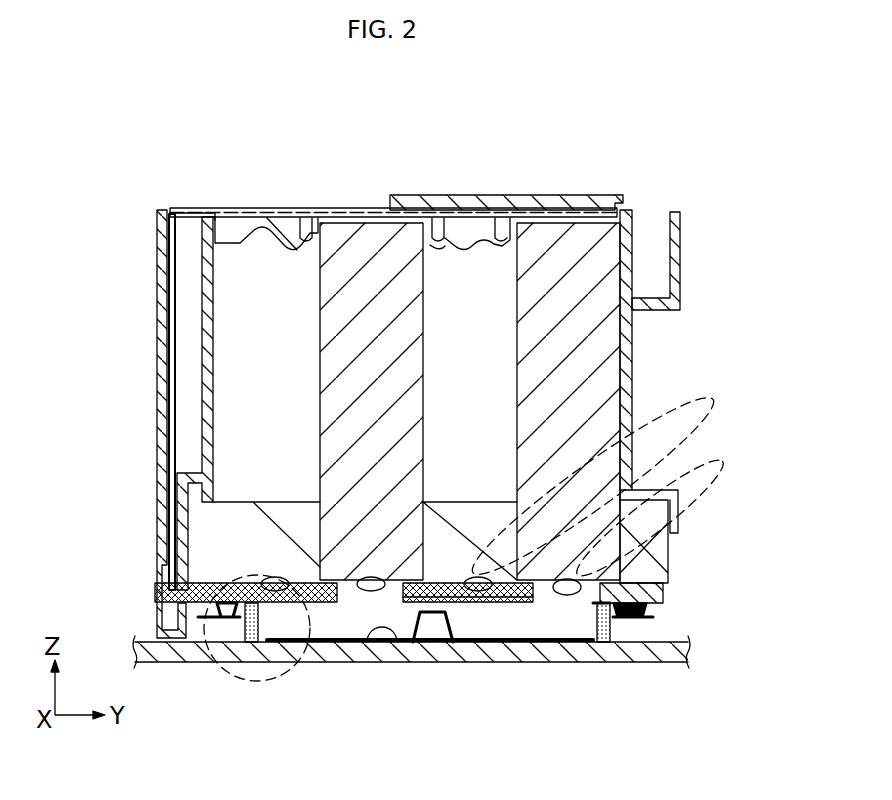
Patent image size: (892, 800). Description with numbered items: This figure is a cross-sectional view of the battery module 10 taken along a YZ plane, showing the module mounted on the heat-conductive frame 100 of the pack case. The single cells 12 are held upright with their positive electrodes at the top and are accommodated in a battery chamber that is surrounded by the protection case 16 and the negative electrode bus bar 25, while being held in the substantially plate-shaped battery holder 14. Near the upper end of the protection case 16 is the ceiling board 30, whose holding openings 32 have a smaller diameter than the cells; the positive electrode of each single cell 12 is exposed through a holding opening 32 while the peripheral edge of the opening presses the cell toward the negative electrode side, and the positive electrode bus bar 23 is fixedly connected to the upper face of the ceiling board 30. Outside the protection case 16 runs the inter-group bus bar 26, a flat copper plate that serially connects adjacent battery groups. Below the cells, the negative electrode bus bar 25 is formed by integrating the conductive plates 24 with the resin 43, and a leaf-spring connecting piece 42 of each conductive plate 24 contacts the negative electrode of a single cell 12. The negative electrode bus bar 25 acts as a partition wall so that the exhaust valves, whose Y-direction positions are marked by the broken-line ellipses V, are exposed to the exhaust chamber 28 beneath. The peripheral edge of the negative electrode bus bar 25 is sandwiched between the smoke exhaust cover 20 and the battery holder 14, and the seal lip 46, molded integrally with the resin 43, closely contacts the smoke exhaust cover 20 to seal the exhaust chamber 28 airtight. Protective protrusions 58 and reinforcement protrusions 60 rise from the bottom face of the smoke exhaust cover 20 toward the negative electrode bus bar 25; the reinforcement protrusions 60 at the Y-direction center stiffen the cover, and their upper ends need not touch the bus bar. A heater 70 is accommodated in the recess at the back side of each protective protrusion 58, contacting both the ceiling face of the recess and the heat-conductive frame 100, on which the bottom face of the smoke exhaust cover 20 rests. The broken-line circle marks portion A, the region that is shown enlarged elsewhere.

The battery module 10 is at (445, 168).
The single cell 12 is at (378, 250).
The battery holder 14 is at (647, 513).
The protection case 16 is at (203, 300).
The smoke exhaust cover 20 is at (386, 655).
The positive electrode bus bar 23 is at (218, 208).
The conductive plate 24 is at (529, 597).
The negative electrode bus bar 25 is at (553, 715).
The inter-group bus bar 26 is at (170, 388).
The exhaust chamber 28 is at (356, 631).
The ceiling board 30 is at (252, 228).
The holding opening 32 is at (352, 212).
The connecting piece 42 is at (567, 600).
The resin 43 is at (497, 595).
The seal lip 46 is at (647, 607).
The protective protrusion 58 is at (245, 578).
The reinforcement protrusion 60 is at (434, 660).
The heater 70 is at (250, 648).
The heat-conductive frame 100 is at (327, 660).
The portion A is at (215, 665).
The broken-line ellipse V is at (698, 415).